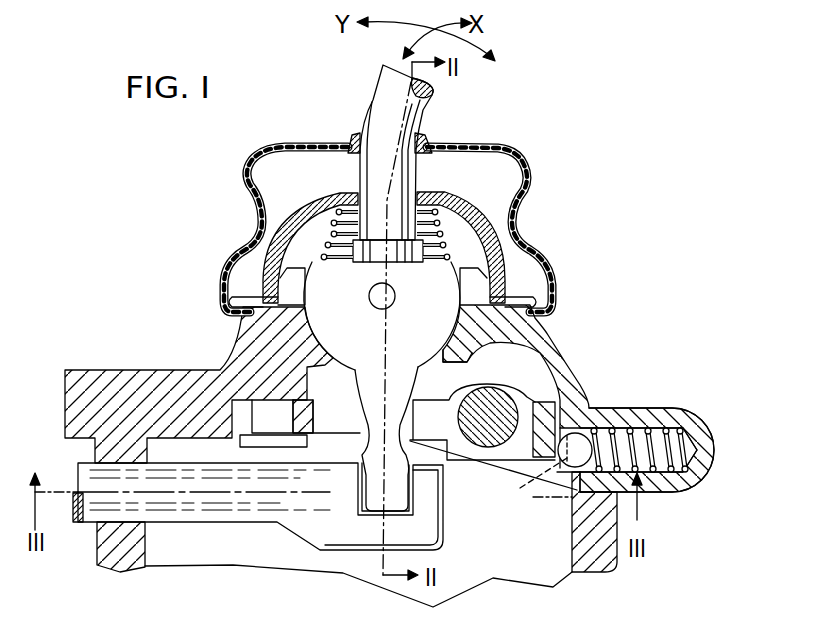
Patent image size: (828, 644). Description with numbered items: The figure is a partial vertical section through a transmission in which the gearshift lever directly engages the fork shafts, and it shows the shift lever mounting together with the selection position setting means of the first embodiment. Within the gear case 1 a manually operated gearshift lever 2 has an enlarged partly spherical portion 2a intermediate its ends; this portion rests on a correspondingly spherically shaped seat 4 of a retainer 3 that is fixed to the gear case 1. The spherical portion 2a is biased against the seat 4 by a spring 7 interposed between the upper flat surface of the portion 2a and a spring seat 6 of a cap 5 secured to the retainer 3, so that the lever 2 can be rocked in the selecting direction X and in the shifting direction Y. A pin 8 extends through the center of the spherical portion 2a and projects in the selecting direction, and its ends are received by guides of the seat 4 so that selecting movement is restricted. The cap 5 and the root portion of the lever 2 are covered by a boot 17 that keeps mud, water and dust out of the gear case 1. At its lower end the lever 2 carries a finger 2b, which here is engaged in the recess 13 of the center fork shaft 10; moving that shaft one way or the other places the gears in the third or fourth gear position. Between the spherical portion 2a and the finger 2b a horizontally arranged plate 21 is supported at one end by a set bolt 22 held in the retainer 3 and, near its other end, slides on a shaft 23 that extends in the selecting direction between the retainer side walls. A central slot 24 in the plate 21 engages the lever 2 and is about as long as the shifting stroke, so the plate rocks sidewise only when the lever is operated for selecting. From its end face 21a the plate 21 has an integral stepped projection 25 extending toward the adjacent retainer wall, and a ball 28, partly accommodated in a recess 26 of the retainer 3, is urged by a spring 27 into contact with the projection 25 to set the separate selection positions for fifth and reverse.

The gear case 1 is at (150, 370).
The gearshift lever 2 is at (420, 115).
The partly spherical portion 2a is at (387, 353).
The finger 2b is at (362, 497).
The retainer 3 is at (560, 350).
The spherically shaped seat 4 is at (475, 356).
The cap 5 is at (453, 198).
The spring seat 6 is at (452, 236).
The spring 7 is at (326, 245).
The pin 8 is at (396, 297).
The center fork shaft 10 is at (213, 522).
The recess 13 is at (358, 515).
The boot 17 is at (510, 150).
The plate 21 is at (340, 407).
The end face 21a is at (545, 400).
The set bolt 22 is at (308, 445).
The shaft 23 is at (460, 417).
The slot 24 is at (500, 467).
The stepped projection 25 is at (530, 485).
The recess 26 is at (623, 428).
The spring 27 is at (662, 408).
The ball 28 is at (580, 437).